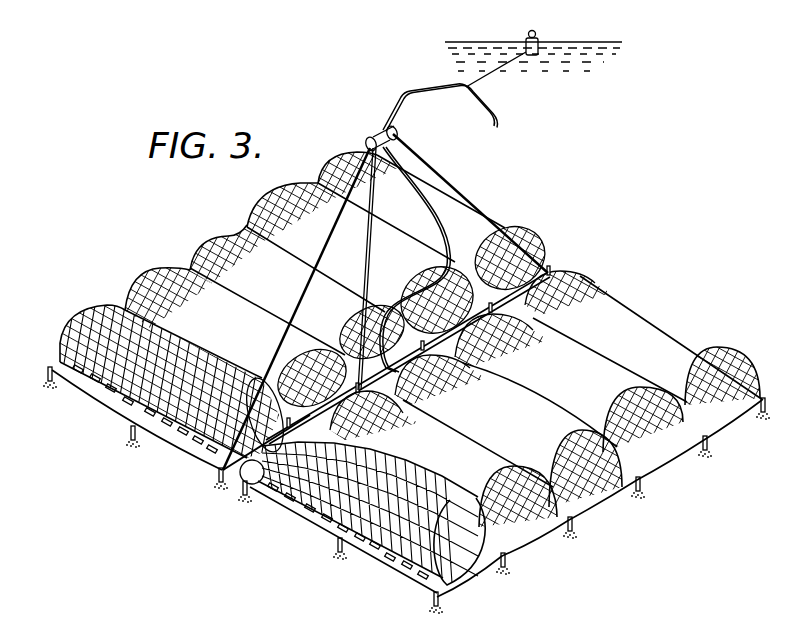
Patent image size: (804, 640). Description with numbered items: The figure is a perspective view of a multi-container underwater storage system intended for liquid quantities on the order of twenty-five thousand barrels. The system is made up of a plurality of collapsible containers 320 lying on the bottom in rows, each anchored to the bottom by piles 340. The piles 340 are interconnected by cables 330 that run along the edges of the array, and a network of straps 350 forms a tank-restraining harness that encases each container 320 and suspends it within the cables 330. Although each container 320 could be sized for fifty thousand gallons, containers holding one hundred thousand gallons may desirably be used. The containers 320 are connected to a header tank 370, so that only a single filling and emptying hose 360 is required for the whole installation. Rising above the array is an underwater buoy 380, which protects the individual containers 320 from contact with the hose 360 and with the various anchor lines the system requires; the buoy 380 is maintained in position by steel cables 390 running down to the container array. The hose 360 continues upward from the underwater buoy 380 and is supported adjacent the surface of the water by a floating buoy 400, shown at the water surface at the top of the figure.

The collapsible container 320 is at (664, 319).
The cables 330 is at (313, 527).
The piles 340 is at (712, 447).
The straps 350 is at (445, 560).
The filling and emptying hose 360 is at (421, 168).
The header tank 370 is at (238, 480).
The underwater buoy 380 is at (368, 139).
The steel cables 390 is at (444, 177).
The floating buoy 400 is at (536, 35).